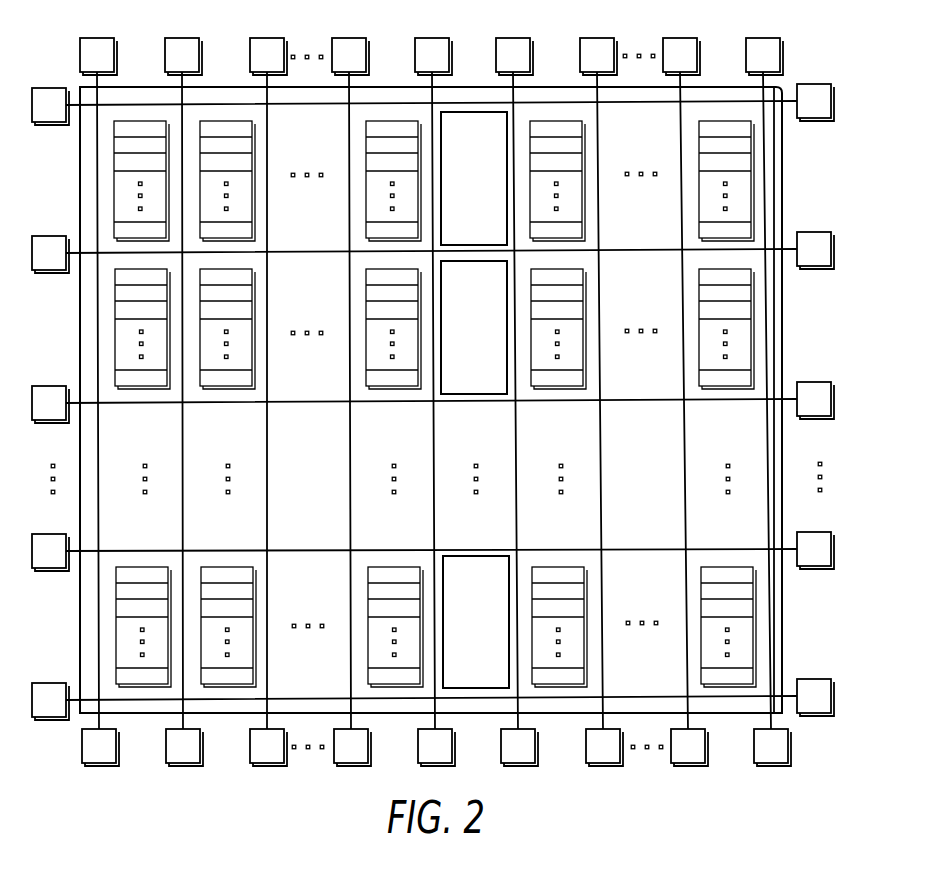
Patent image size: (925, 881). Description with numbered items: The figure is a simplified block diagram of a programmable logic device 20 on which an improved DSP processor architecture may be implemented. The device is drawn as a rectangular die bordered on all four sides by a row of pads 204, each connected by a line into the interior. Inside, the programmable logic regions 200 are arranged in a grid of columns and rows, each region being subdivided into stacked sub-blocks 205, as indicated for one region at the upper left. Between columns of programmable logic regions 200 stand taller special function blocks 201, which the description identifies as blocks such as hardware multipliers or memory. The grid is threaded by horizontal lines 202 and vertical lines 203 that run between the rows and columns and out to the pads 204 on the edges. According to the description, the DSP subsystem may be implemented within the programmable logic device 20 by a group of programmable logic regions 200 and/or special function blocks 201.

The programmable logic device 20 is at (45, 366).
The programmable logic regions 200 is at (386, 398).
The special function blocks 201 is at (475, 400).
The horizontal bus lines 202 is at (618, 252).
The vertical bus lines 203 is at (683, 258).
The bond pad 204 is at (63, 237).
The memory sub-blocks 205 is at (120, 232).